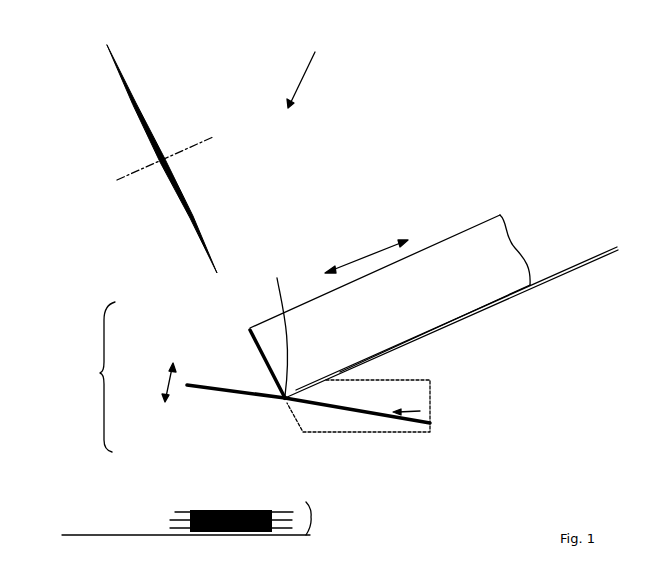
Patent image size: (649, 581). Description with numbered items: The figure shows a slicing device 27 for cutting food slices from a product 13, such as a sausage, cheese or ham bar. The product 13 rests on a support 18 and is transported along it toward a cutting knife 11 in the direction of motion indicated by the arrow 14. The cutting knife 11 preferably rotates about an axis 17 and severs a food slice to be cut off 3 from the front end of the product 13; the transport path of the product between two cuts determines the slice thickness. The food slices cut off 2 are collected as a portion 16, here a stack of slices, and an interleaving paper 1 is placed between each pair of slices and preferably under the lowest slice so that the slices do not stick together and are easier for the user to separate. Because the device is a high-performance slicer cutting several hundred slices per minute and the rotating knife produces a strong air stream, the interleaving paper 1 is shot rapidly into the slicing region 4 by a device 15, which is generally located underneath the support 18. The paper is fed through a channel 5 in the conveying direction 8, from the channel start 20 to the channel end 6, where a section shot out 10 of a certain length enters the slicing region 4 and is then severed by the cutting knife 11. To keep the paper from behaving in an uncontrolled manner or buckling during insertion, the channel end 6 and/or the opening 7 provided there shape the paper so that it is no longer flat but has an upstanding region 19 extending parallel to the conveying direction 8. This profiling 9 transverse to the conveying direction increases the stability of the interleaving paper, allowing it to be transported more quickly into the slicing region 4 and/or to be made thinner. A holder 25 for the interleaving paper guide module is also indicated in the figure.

The interleaving paper 1 is at (205, 383).
The food slice cut off 2 is at (170, 519).
The food slice to be cut off 3 is at (247, 332).
The slicing region 4 is at (100, 373).
The channel 5 is at (373, 407).
The channel end 6 is at (280, 408).
The opening 7 is at (288, 404).
The conveying direction of the interleaving paper 8 is at (420, 410).
The profiling transverse to the conveying direction 9 is at (167, 380).
The section shot out 10 is at (218, 395).
The cutting knife 11 is at (141, 120).
The product, food bar 13 is at (462, 263).
The direction of motion of the food bar 14 is at (368, 257).
The device for shooting the interleaving paper in 15 is at (392, 427).
The portion comprising a plurality of food slices 16 is at (313, 518).
The axis of rotation of the cutting knife 17 is at (213, 137).
The support for the food bar 18 is at (567, 272).
The upstanding region of the interleaving paper 19 is at (238, 390).
The channel start 20 is at (262, 400).
The holder for interleaving paper guide module 25 is at (279, 328).
The slicing device 27 is at (318, 69).